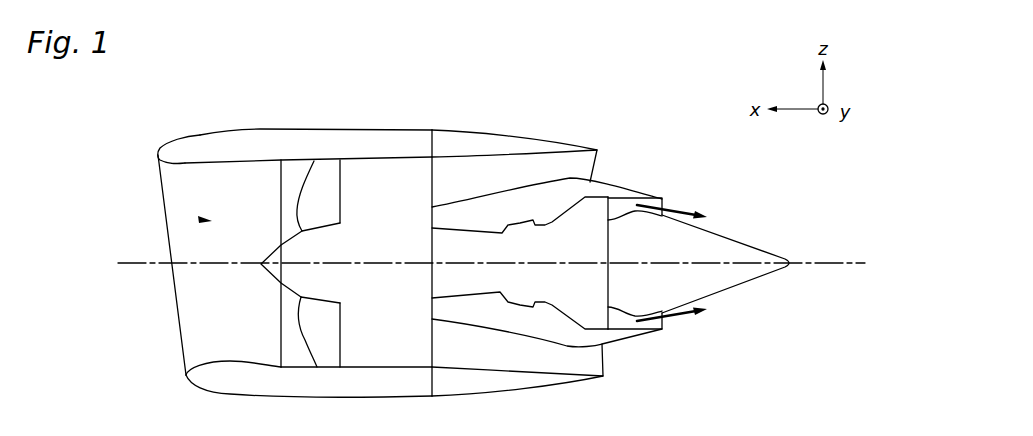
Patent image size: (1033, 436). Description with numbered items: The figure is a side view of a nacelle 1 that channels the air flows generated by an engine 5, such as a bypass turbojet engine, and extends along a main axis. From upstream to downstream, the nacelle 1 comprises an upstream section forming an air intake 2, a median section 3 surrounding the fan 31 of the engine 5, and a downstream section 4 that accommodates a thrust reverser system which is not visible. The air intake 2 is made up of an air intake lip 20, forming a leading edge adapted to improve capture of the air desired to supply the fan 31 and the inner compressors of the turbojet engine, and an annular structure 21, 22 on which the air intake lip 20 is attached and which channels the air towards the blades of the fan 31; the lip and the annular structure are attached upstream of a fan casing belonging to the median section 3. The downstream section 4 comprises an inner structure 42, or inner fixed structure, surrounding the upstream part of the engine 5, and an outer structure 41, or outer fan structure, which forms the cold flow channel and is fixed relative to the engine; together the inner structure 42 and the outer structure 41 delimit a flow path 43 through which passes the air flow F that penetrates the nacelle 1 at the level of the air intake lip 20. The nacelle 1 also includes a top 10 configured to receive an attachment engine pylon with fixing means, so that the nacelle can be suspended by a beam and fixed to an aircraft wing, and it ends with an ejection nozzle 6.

The nacelle 1 is at (608, 125).
The air intake 2 is at (165, 155).
The air intake lip 20 is at (171, 138).
The annular structure 21 is at (217, 130).
The annular structure 22 is at (233, 363).
The top 10 is at (410, 130).
The median section 3 is at (400, 147).
The fan 31 is at (395, 352).
The downstream section 4 is at (520, 133).
The outer structure 41 is at (538, 143).
The inner structure 42 is at (575, 178).
The flow path 43 is at (443, 178).
The engine 5 is at (590, 222).
The ejection nozzle 6 is at (740, 220).
The air flow F is at (200, 219).